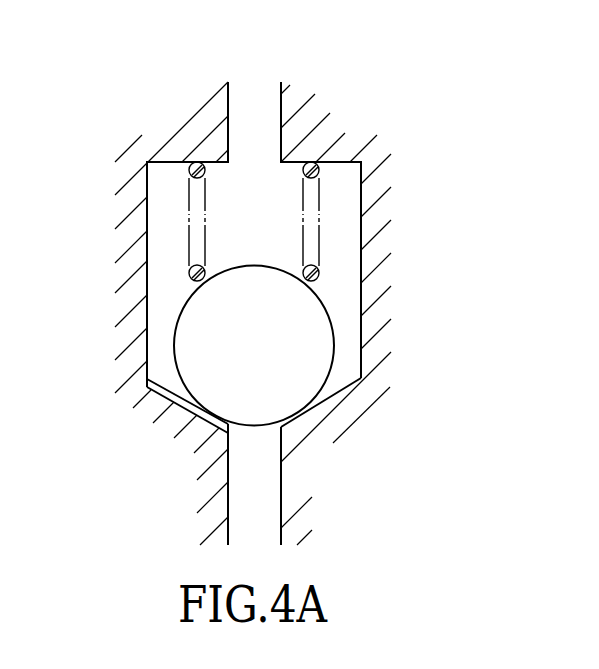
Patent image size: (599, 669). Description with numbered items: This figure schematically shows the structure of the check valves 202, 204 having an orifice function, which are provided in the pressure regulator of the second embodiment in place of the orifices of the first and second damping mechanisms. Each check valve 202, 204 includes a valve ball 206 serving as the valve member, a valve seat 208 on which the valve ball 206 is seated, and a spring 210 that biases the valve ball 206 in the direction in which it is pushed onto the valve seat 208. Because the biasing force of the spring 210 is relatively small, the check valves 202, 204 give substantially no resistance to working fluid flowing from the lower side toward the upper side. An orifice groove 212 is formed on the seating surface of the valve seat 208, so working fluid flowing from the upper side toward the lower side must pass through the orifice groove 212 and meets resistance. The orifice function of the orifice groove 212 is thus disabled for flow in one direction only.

The check valve 202 is at (427, 74).
The check valve 204 is at (332, 295).
The valve ball 206 is at (308, 320).
The valve seat 208 is at (330, 393).
The spring 210 is at (315, 177).
The orifice groove 212 is at (167, 385).